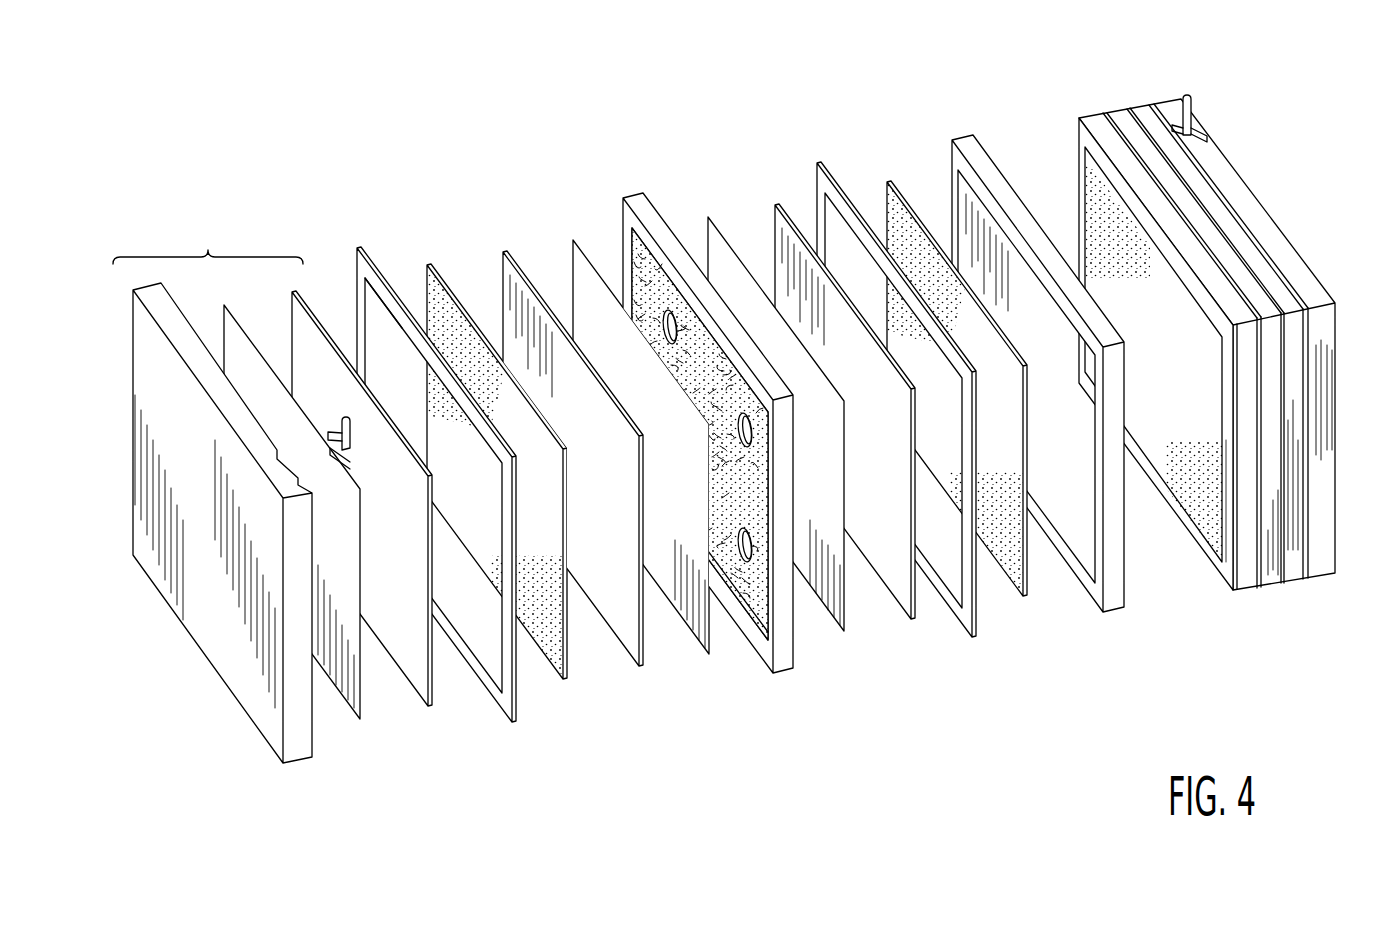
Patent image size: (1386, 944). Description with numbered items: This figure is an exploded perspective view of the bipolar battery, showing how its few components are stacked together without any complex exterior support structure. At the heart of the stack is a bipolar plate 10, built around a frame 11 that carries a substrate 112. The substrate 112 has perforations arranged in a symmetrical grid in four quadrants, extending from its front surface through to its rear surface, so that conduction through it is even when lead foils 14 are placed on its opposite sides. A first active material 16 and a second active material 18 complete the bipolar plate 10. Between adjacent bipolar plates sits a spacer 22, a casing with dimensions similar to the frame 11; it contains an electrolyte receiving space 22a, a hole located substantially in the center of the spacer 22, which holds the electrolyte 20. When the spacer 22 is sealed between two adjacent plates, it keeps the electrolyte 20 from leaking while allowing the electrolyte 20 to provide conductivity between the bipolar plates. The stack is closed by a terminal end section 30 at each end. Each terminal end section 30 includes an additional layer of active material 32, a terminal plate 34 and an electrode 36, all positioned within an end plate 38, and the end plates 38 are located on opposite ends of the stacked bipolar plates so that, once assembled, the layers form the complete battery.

The bipolar plate 10 is at (631, 198).
The frame 11 is at (786, 672).
The substrate 112 is at (645, 262).
The lead foil 14 is at (710, 656).
The first active material 16 is at (640, 668).
The second active material 18 is at (775, 206).
The electrolyte 20 is at (432, 264).
The spacer 22 is at (356, 250).
The electrolyte receiving space 22a is at (394, 270).
The terminal end section 30 is at (1333, 118).
The active material 32 is at (431, 709).
The terminal plate 34 is at (363, 720).
The electrode 36 is at (340, 437).
The end plate 38 is at (300, 763).